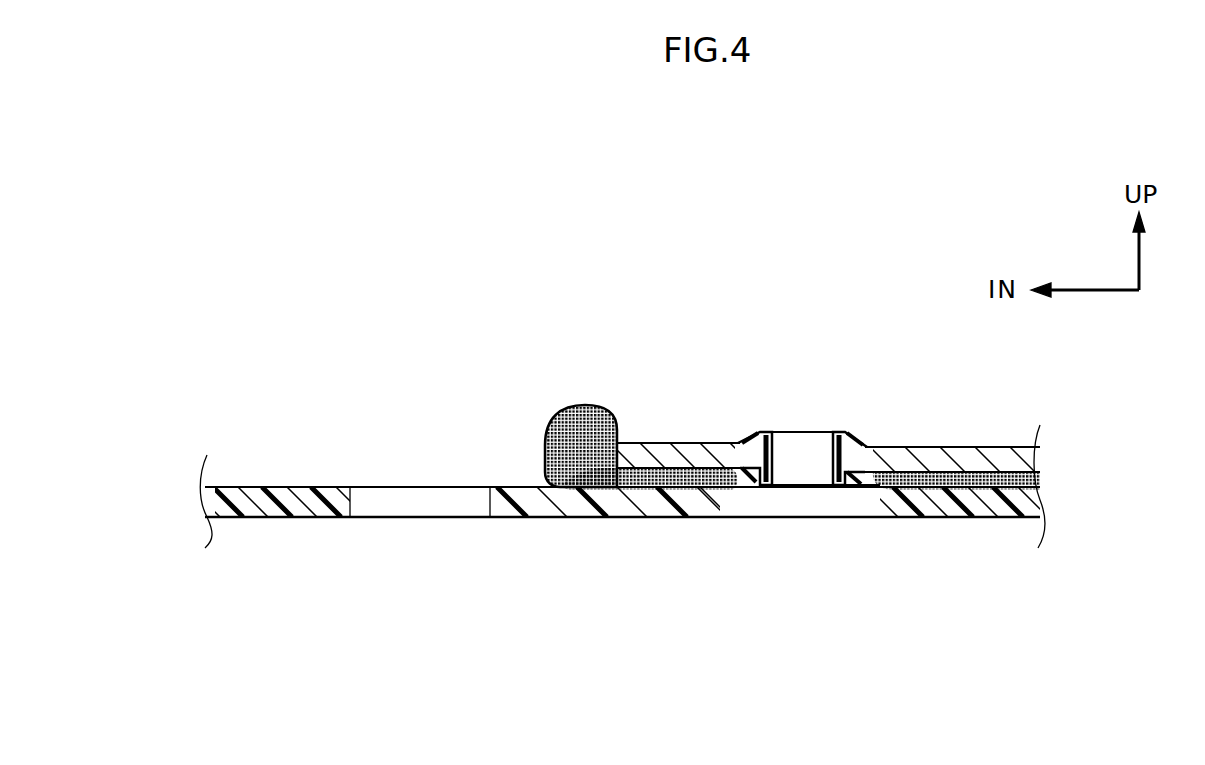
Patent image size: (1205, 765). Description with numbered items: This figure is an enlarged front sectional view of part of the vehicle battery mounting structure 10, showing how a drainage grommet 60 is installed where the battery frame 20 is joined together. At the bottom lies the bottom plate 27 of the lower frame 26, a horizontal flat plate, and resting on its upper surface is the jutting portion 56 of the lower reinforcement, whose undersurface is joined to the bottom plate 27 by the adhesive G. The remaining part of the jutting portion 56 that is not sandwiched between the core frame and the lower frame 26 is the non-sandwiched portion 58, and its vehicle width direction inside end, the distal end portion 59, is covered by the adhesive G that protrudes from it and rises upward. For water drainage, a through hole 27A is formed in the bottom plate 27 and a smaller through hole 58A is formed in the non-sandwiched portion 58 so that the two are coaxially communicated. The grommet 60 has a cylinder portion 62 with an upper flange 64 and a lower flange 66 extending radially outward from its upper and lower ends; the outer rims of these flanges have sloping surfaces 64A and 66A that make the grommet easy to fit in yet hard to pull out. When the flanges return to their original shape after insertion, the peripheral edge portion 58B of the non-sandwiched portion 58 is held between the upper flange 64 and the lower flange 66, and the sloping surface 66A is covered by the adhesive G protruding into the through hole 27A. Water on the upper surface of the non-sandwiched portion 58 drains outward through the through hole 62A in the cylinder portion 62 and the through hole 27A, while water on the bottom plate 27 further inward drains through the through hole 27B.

The vehicle battery mounting structure 10 is at (625, 305).
The battery frame 20 is at (625, 519).
The lower frame 26 is at (270, 519).
The bottom plate 27 is at (253, 487).
The through hole 27A is at (888, 517).
The through hole 27B is at (352, 517).
The jutting portion 56 is at (1002, 440).
The non-sandwiched portion 58 is at (930, 447).
The through hole 58A is at (788, 432).
The peripheral edge portion 58B is at (860, 435).
The distal end portion 59 is at (604, 464).
The grommet 60 is at (848, 425).
The cylinder portion 62 is at (818, 432).
The through hole 62A is at (813, 487).
The upper flange 64 is at (755, 432).
The sloping surface 64A is at (733, 432).
The lower flange 66 is at (752, 487).
The sloping surface 66A is at (727, 487).
The adhesive G is at (568, 405).